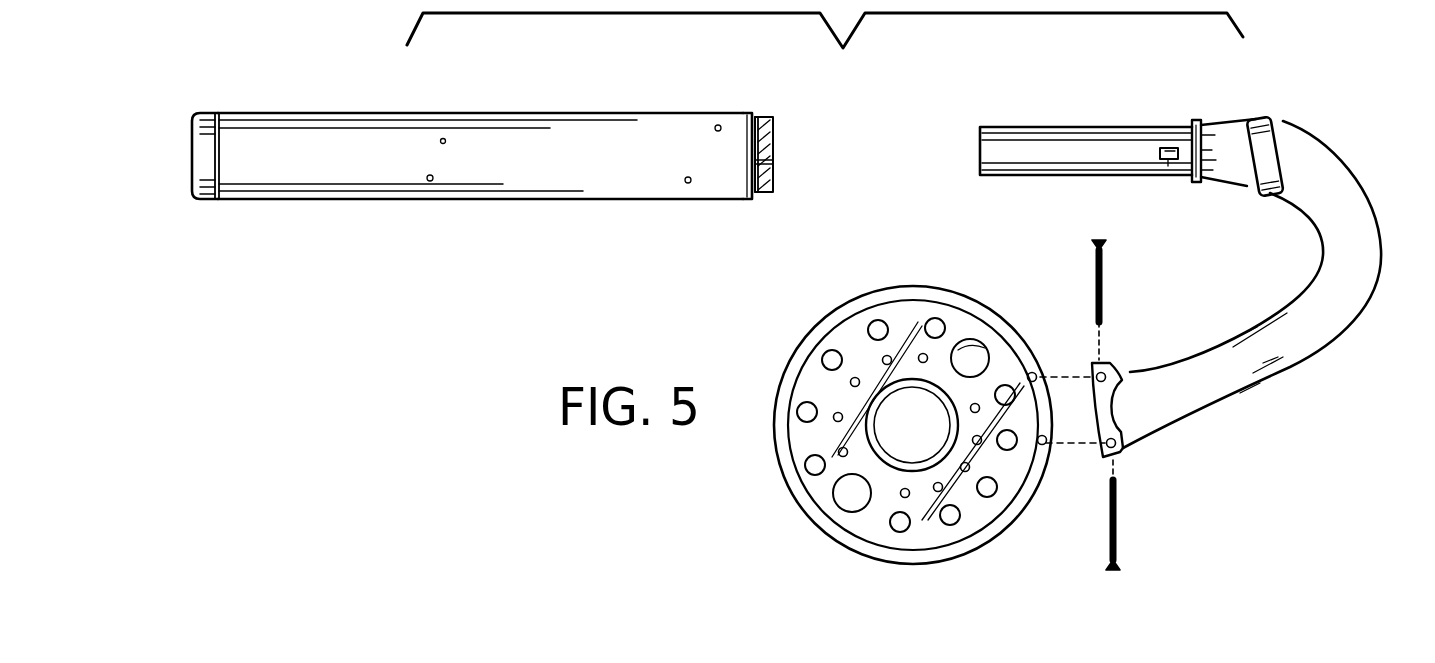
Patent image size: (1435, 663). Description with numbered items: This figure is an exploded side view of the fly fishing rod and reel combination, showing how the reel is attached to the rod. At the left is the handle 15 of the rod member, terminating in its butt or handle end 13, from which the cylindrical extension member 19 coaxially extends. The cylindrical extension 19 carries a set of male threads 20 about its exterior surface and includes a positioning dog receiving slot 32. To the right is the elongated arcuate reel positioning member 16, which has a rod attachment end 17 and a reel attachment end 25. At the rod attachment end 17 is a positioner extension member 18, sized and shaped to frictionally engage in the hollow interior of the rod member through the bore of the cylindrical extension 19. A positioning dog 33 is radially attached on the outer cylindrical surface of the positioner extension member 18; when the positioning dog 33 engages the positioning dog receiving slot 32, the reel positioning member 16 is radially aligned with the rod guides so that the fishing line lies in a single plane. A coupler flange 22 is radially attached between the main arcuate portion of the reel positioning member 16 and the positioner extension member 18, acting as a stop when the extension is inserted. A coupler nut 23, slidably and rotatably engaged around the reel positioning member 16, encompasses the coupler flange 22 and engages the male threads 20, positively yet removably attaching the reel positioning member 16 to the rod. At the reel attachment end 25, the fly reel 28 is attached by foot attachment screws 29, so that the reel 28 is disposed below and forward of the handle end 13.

The handle end 13 is at (746, 185).
The handle 15 is at (478, 113).
The reel positioning member 16 is at (1356, 173).
The rod attachment end 17 is at (1230, 176).
The positioner extension member 18 is at (1052, 127).
The cylindrical extension member 19 is at (776, 141).
The male threads 20 is at (766, 118).
The coupler flange 22 is at (1197, 118).
The coupler nut 23 is at (1272, 113).
The reel attachment end 25 is at (1122, 376).
The fly reel 28 is at (978, 306).
The foot attachment screws 29 is at (1121, 430).
The positioning dog receiving slot 32 is at (774, 162).
The positioning dog 33 is at (1163, 173).